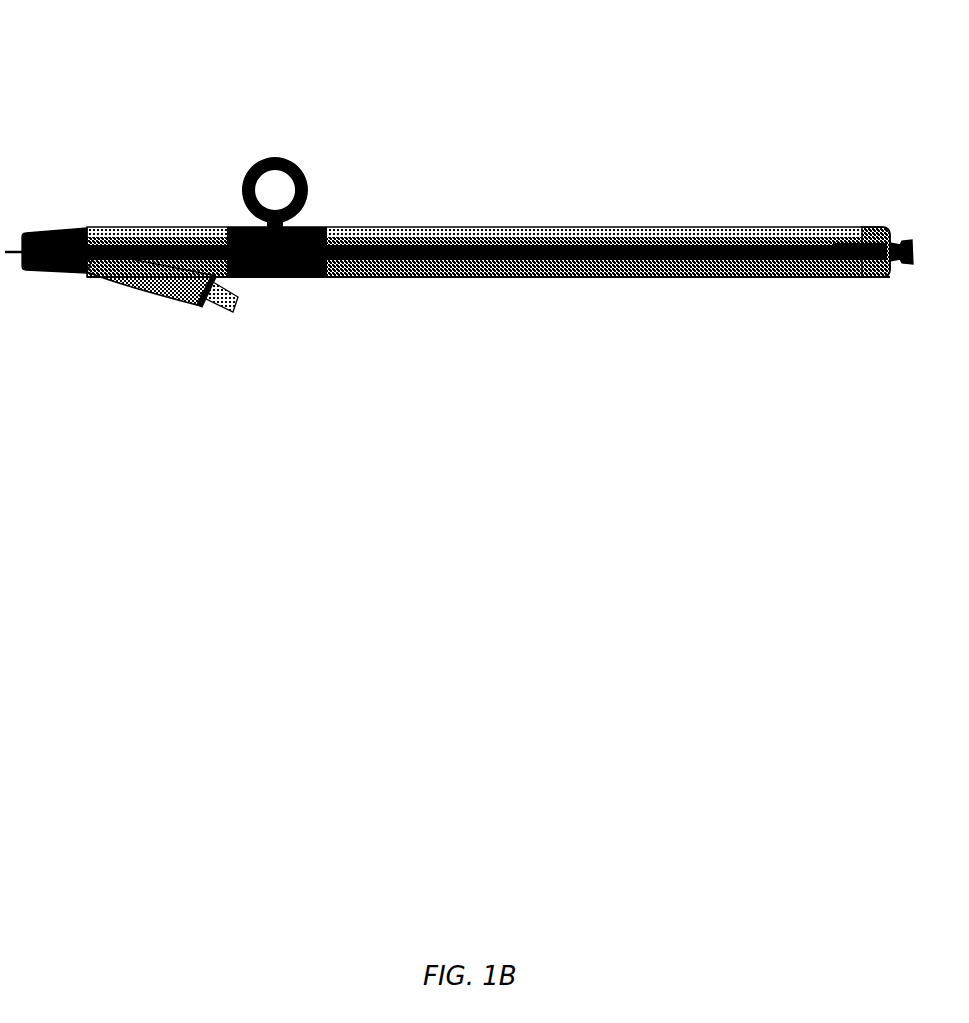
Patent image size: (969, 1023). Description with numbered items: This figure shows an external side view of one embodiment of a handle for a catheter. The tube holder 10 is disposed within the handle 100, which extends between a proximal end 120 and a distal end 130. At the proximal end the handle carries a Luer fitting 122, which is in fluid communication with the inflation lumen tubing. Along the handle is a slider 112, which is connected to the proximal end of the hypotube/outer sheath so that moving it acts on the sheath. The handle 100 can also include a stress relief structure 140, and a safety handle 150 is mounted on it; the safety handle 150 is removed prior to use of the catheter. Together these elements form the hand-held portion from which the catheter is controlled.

The tube holder 10 is at (167, 298).
The handle 100 is at (557, 227).
The slider 112 is at (265, 280).
The proximal end 120 is at (878, 227).
The Luer fitting 122 is at (903, 265).
The distal end 130 is at (30, 232).
The stress relief structure 140 is at (625, 278).
The safety handle 150 is at (275, 158).